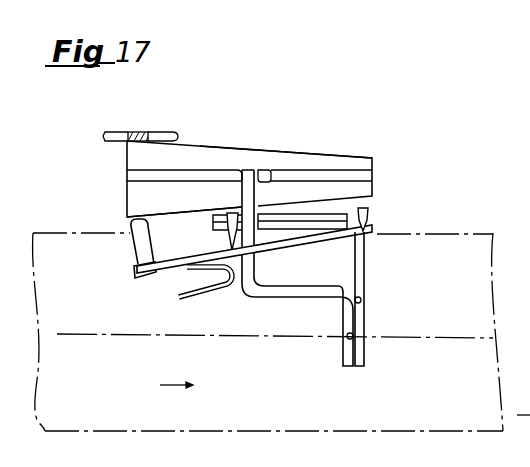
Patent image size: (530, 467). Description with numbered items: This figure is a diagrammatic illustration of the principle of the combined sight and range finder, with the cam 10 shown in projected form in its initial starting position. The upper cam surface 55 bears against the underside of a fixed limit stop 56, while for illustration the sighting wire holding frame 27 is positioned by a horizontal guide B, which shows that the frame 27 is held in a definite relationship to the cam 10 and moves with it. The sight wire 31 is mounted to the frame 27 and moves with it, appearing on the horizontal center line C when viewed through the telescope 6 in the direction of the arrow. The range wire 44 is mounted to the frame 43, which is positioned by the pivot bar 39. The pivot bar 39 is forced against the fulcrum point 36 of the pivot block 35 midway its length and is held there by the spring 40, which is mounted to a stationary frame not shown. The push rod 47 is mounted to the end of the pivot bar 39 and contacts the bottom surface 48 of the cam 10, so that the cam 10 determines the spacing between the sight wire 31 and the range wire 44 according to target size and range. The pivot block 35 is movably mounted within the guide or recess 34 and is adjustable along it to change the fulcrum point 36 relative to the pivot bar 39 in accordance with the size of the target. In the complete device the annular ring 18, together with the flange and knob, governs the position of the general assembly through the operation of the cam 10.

The telescope 6 is at (103, 403).
The cam 10 is at (288, 163).
The annular ring 18 is at (108, 132).
The sighting wire holding frame 27 is at (251, 280).
The sight wire 31 is at (350, 338).
The guide or recess 34 is at (275, 218).
The pivot block 35 is at (232, 220).
The fulcrum point 36 is at (228, 241).
The pivot bar 39 is at (345, 238).
The spring 40 is at (222, 290).
The frame 43 is at (362, 252).
The range wire 44 is at (361, 301).
The push rod 47 is at (143, 253).
The bottom surface 48 is at (170, 212).
The upper cam surface 55 is at (343, 155).
The fixed limit stop 56 is at (147, 132).
The horizontal guide B is at (366, 177).
The horizontal center line C is at (415, 338).